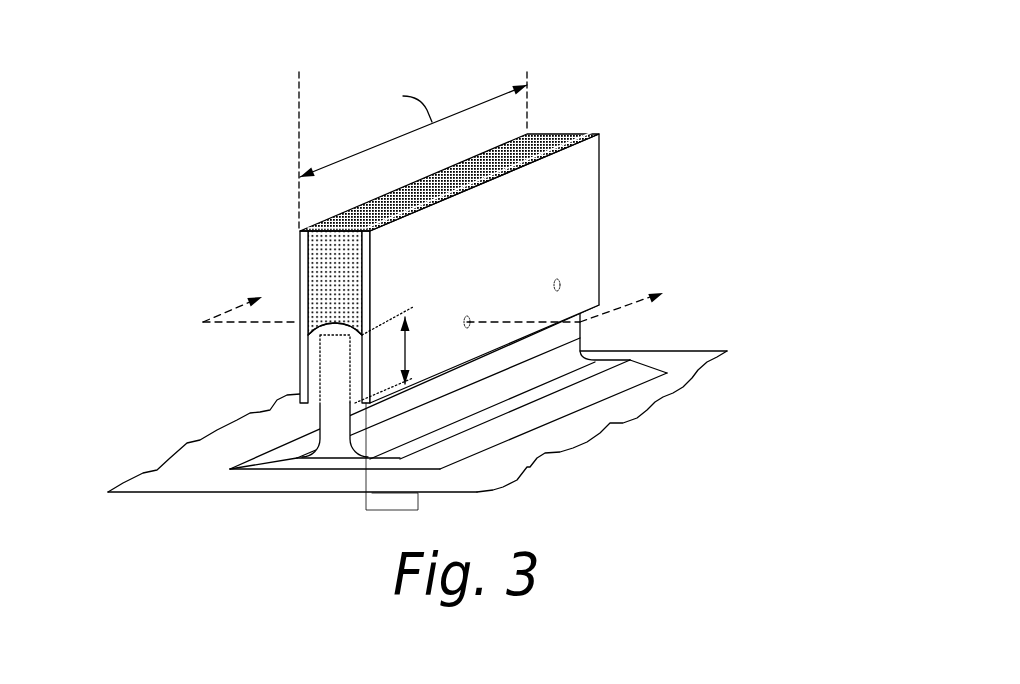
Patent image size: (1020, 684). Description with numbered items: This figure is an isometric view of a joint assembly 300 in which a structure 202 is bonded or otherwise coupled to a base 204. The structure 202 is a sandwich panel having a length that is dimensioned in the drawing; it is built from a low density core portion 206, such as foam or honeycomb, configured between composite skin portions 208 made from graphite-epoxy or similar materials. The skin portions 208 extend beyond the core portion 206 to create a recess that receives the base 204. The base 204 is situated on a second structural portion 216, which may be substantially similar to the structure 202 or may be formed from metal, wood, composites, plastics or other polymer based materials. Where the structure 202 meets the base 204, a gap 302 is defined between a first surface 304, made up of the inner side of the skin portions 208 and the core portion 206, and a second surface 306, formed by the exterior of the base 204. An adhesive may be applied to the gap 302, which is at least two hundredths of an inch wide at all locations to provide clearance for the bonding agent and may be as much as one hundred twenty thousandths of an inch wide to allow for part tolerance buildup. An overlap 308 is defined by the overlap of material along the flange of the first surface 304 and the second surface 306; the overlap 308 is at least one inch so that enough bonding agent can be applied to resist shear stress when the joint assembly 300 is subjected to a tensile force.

The joint assembly 300 is at (181, 83).
The structure 202 is at (608, 117).
The base 204 is at (620, 337).
The core portion 206 is at (563, 132).
The skin portions 208 is at (298, 277).
The second structural portion 216 is at (708, 351).
The gap 302 is at (300, 348).
The first surface 304 is at (355, 378).
The second surface 306 is at (310, 373).
The overlap 308 is at (405, 348).